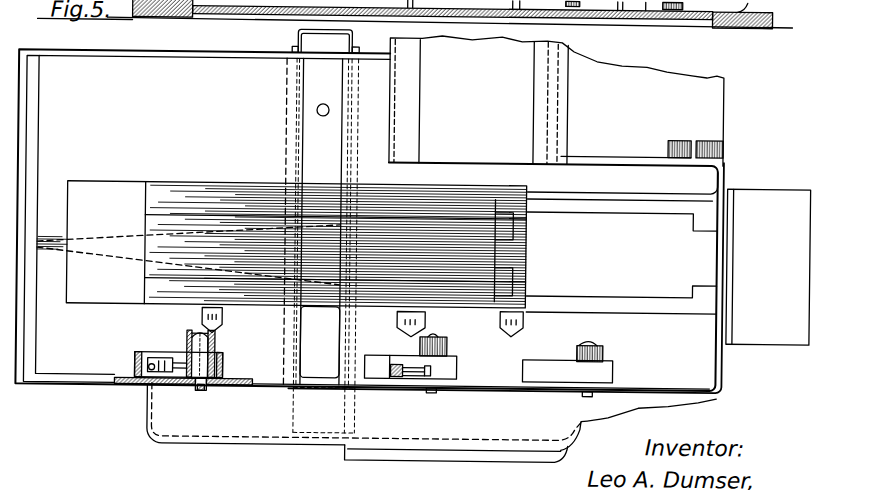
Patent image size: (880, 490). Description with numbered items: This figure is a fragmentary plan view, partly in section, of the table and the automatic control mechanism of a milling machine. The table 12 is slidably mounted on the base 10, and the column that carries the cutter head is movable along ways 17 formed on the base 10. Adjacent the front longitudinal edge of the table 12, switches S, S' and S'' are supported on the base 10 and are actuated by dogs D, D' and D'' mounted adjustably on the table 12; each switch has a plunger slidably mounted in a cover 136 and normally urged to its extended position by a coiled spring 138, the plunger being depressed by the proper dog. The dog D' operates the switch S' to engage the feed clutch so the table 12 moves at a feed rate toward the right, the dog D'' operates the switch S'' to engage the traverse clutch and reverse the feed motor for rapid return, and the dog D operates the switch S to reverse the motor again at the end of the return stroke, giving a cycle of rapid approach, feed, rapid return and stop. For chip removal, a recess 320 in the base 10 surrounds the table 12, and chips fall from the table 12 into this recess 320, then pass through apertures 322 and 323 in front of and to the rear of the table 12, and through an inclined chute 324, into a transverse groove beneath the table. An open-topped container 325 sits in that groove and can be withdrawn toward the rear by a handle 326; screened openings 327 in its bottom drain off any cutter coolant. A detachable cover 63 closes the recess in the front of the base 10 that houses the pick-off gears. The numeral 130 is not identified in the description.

The base 10 is at (247, 430).
The table 12 is at (201, 186).
The ways 17 is at (540, 126).
The detachable cover 63 is at (437, 452).
The photocell cap 130 is at (198, 336).
The cover 136 is at (170, 355).
The coiled spring 138 is at (203, 393).
The recess 320 is at (72, 357).
The aperture 322 is at (305, 350).
The aperture 323 is at (299, 115).
The inclined chute 324 is at (122, 254).
The container 325 is at (292, 420).
The handle 326 is at (291, 37).
The screened openings 327 is at (322, 105).
The switch S is at (178, 350).
The switch S' is at (410, 354).
The switch S'' is at (584, 362).
The dog D is at (227, 321).
The dog D' is at (430, 325).
The dog D'' is at (531, 325).